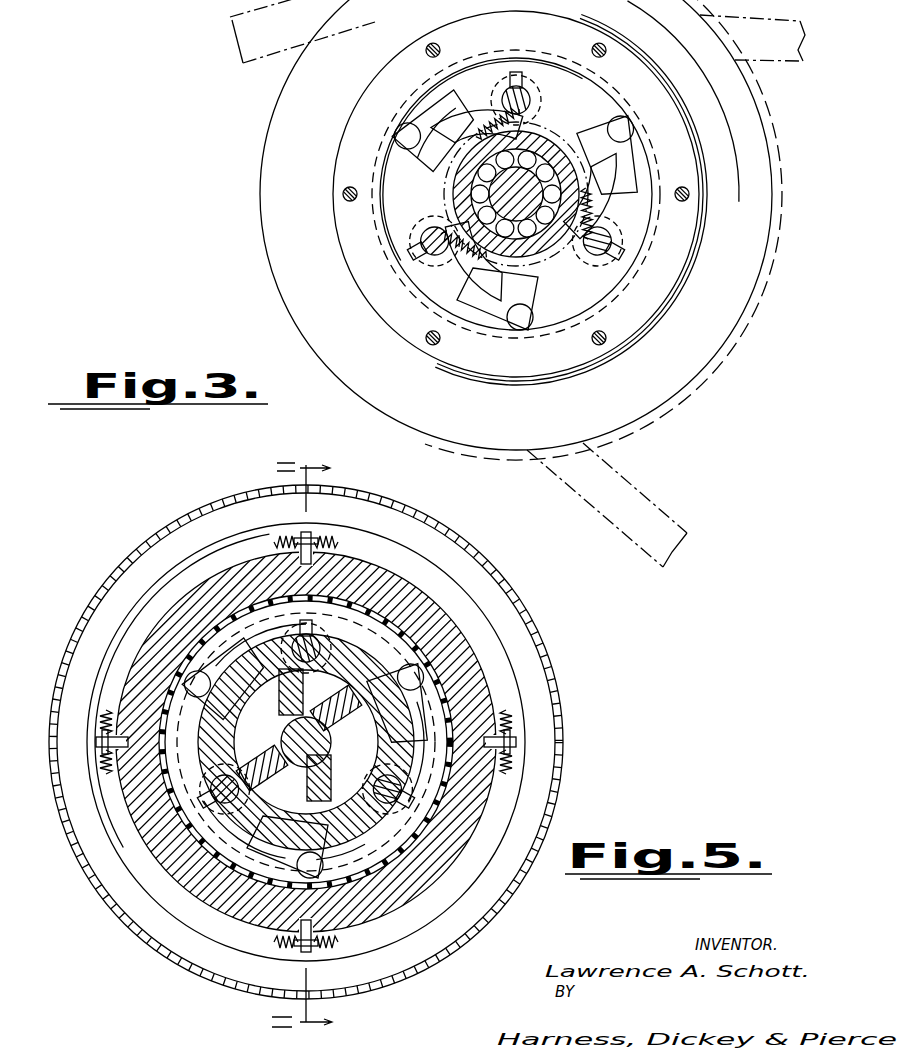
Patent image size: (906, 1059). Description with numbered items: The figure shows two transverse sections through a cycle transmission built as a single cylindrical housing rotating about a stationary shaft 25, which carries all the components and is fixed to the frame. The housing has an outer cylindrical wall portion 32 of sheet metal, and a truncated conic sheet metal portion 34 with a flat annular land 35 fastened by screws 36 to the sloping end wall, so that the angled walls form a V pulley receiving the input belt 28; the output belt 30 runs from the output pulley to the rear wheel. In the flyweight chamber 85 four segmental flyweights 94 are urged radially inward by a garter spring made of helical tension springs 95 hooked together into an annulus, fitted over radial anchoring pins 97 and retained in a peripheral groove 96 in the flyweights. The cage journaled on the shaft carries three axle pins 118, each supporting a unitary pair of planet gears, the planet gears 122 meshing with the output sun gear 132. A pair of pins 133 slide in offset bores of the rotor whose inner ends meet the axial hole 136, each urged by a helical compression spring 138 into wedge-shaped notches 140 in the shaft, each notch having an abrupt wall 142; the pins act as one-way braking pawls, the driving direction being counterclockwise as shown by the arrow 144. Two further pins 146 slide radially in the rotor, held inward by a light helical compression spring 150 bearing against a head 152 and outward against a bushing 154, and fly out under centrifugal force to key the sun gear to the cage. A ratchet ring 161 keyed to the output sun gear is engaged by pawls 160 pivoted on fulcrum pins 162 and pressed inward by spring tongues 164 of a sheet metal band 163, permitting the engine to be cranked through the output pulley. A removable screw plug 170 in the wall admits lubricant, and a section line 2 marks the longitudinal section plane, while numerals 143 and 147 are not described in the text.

In FIG. 5, the section line 2- 2 is at (307, 746).
In FIG. 3, the stationary shaft 25 is at (515, 286).
In FIG. 3, the input belt 28 is at (243, 44).
In FIG. 3, the output belt 30 is at (626, 500).
In FIG. 5, the outer cylindrical wall portion 32 is at (455, 541).
In FIG. 3, the truncated conic sheet metal portion 34 is at (270, 200).
In FIG. 3, the flat annular land 35 is at (680, 218).
In FIG. 3, the screws 36 is at (597, 56).
In FIG. 5, the flyweight chamber 85 is at (524, 727).
In FIG. 5, the segmental flyweights 94 is at (395, 572).
In FIG. 5, the helical tension springs 95 is at (290, 537).
In FIG. 5, the peripheral groove 96 is at (362, 551).
In FIG. 5, the radial anchoring pins 97 is at (313, 538).
In FIG. 3, the axle pins 118 is at (533, 97).
In FIG. 5, the axle pins 118 is at (222, 771).
In FIG. 3, the planet gears 122 is at (541, 119).
In FIG. 5, the planet gears 122 is at (160, 753).
In FIG. 3, the output sun gear 132 is at (548, 137).
In FIG. 5, the output sun gear 132 is at (398, 786).
In FIG. 5, the pins 133 is at (258, 655).
In FIG. 5, the axial hole 136 is at (378, 797).
In FIG. 5, the helical compression spring 138 is at (348, 846).
In FIG. 5, the notches 140 is at (368, 613).
In FIG. 5, the abrupt wall 142 is at (326, 752).
In FIG. 5, the jaw 143 is at (252, 824).
In FIG. 5, the arrow 144 is at (175, 548).
In FIG. 5, the pins 146 is at (318, 668).
In FIG. 5, the jaw 147 is at (278, 776).
In FIG. 5, the helical compression spring 150 is at (306, 742).
In FIG. 5, the head 152 is at (280, 705).
In FIG. 5, the bushing 154 is at (250, 766).
In FIG. 3, the pawls 160 is at (613, 201).
In FIG. 5, the pawls 160 is at (421, 693).
In FIG. 3, the ratchet ring 161 is at (444, 188).
In FIG. 3, the fulcrum pins 162 is at (432, 152).
In FIG. 5, the fulcrum pins 162 is at (300, 882).
In FIG. 3, the sheet metal band 163 is at (495, 199).
In FIG. 3, the spring tongues 164 is at (462, 318).
In FIG. 3, the screw plug 170 is at (505, 62).
In FIG. 5, the screw plug 170 is at (340, 620).